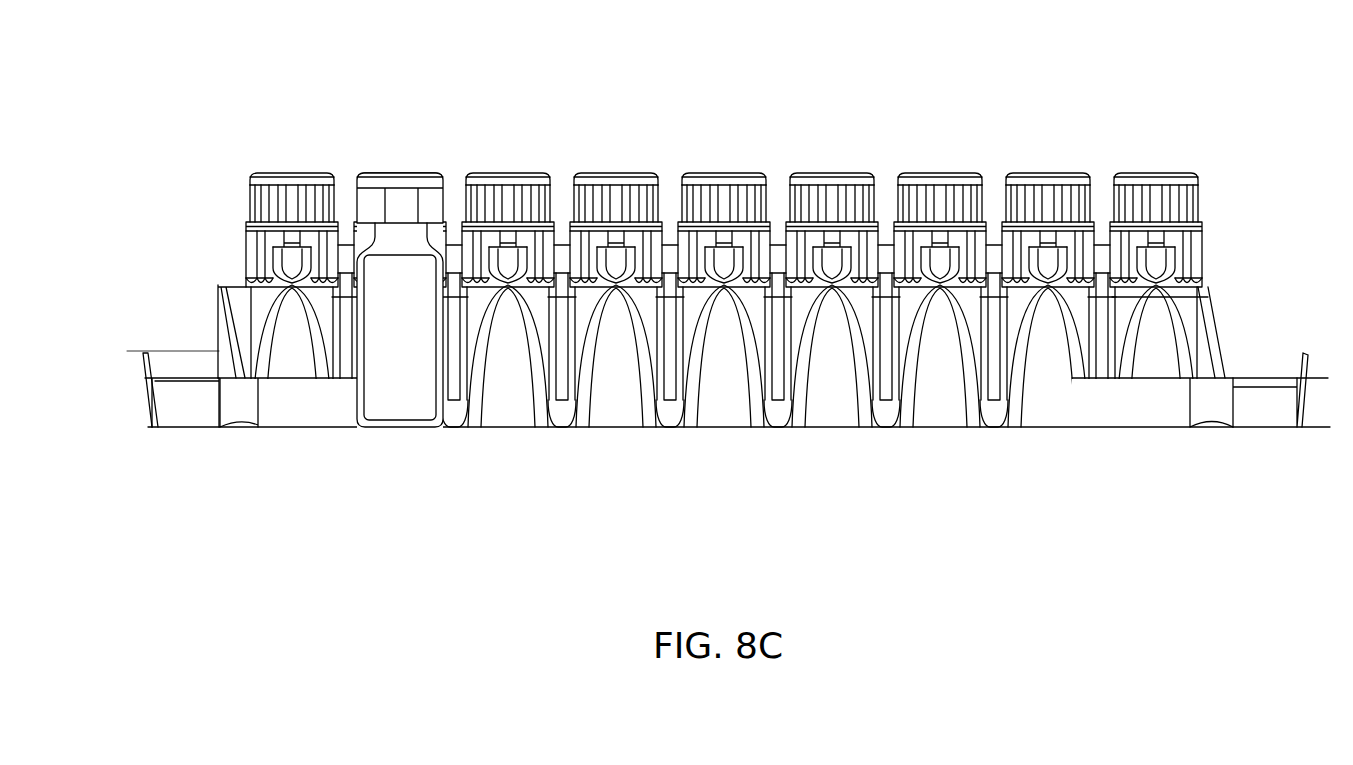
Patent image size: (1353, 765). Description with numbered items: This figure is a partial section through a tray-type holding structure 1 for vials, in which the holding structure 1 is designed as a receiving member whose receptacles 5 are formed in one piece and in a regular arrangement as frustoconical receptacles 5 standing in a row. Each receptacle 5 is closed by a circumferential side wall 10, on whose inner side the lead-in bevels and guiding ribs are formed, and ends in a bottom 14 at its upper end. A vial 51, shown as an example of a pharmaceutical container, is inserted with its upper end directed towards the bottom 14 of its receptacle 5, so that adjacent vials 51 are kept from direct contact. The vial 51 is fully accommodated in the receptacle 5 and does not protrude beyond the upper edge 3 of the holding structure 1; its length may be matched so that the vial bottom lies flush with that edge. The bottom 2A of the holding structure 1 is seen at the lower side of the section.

The holding structure 1 is at (95, 117).
The bottom 2A is at (180, 377).
The upper edge 3 is at (145, 390).
The receptacle 5 is at (293, 353).
The side wall 10 is at (268, 156).
The bottom 14 is at (299, 172).
The vial 51 is at (398, 280).